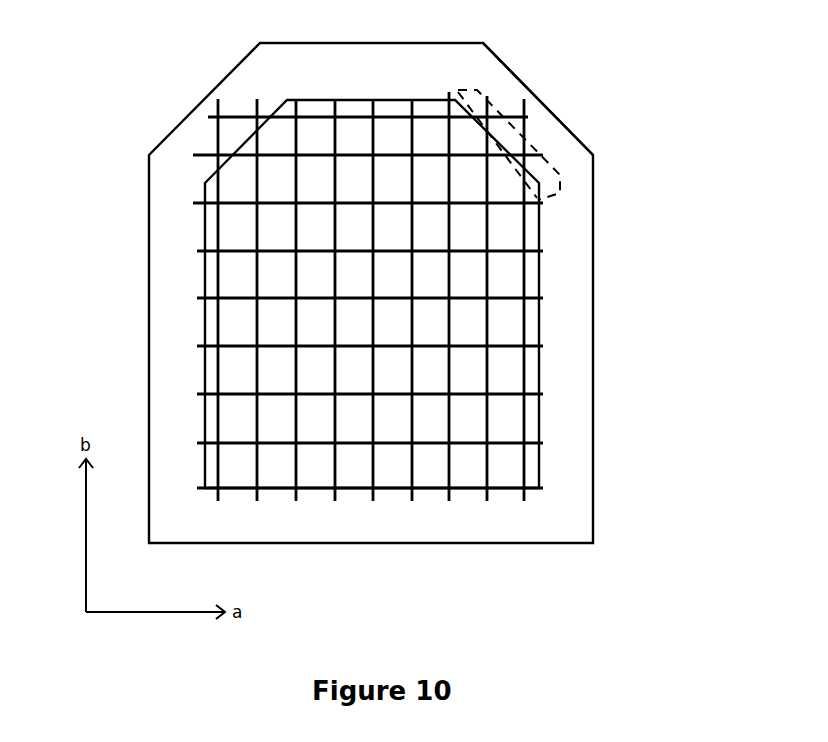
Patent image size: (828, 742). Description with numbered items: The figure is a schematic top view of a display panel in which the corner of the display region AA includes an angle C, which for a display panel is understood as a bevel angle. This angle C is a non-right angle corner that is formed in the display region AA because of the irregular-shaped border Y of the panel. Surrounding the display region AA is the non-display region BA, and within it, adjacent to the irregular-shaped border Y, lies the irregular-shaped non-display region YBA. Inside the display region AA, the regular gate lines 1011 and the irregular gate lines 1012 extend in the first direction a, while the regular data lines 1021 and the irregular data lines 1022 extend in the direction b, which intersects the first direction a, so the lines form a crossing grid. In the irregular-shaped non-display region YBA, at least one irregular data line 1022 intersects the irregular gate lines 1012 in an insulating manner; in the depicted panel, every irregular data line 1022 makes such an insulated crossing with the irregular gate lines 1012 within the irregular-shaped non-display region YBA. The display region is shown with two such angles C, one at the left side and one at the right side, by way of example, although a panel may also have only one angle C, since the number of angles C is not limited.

The regular gate line 1011 is at (238, 250).
The irregular gate line 1012 is at (317, 112).
The regular data line 1021 is at (412, 463).
The irregular data line 1022 is at (260, 463).
The display region AA is at (505, 420).
The non-display region BA is at (570, 343).
The irregular-shaped non-display region YBA is at (505, 100).
The angle C is at (538, 200).
The irregular-shaped border Y is at (492, 142).